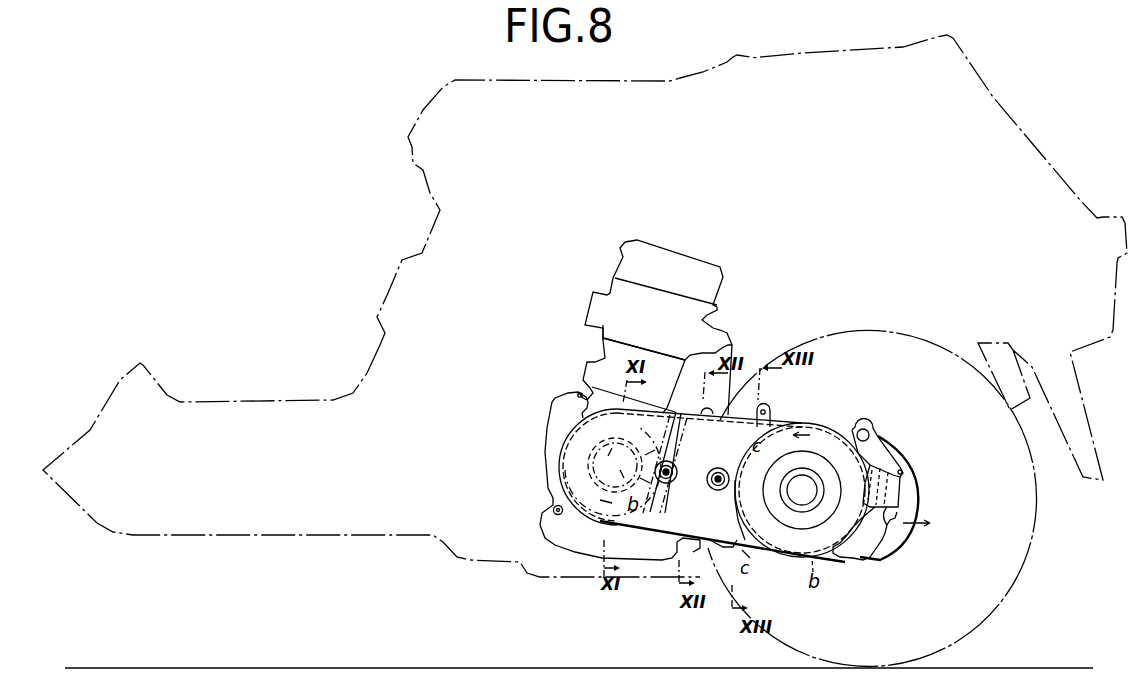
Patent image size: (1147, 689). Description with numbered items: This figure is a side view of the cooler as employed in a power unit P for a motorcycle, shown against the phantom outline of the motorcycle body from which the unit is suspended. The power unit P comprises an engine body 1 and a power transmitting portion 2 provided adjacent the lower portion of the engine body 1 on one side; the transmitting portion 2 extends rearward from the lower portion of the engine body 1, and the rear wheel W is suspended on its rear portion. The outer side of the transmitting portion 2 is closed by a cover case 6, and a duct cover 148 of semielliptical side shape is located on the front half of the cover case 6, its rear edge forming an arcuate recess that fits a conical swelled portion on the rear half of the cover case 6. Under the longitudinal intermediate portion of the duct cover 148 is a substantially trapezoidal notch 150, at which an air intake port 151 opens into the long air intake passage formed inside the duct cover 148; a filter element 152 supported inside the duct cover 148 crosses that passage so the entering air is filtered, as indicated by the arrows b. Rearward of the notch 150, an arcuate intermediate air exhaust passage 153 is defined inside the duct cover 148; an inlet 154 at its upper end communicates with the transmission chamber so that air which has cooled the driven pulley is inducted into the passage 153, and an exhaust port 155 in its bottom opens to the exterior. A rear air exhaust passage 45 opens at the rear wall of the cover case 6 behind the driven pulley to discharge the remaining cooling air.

The engine body 1 is at (676, 380).
The power transmitting portion 2 is at (741, 417).
The cover case 6 is at (832, 433).
The rear air exhaust passage 45 is at (898, 507).
The duct cover 148 is at (572, 447).
The notch 150 is at (693, 543).
The air intake port 151 is at (687, 467).
The filter element 152 is at (733, 443).
The intermediate air exhaust passage 153 is at (753, 510).
The inlet 154 is at (768, 433).
The exhaust port 155 is at (745, 537).
The power unit P is at (562, 393).
The rear wheel W is at (853, 332).